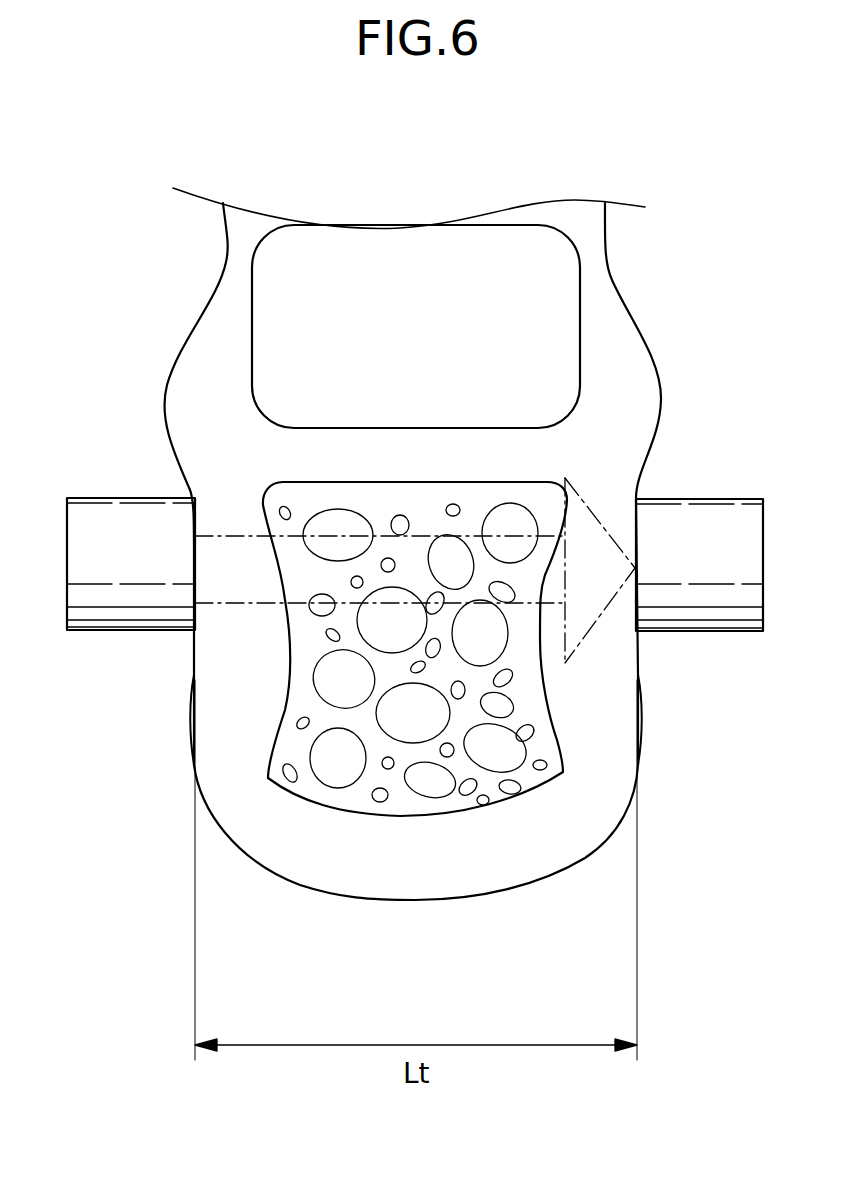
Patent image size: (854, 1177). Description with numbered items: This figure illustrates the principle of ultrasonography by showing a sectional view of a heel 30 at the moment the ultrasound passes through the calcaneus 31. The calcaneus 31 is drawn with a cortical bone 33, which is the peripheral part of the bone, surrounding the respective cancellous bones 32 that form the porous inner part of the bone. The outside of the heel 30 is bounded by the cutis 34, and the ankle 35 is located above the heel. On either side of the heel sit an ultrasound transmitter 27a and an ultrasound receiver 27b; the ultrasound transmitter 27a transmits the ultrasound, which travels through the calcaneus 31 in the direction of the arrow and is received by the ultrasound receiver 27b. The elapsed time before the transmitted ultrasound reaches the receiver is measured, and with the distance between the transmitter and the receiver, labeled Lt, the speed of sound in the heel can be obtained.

The ultrasound transmitter 27a is at (103, 497).
The ultrasound receiver 27b is at (730, 500).
The heel 30 is at (590, 858).
The calcaneus 31 is at (480, 813).
The cancellous bones 32 is at (422, 733).
The cortical bone 33 is at (313, 793).
The cutis 34 is at (190, 710).
The ankle 35 is at (640, 335).